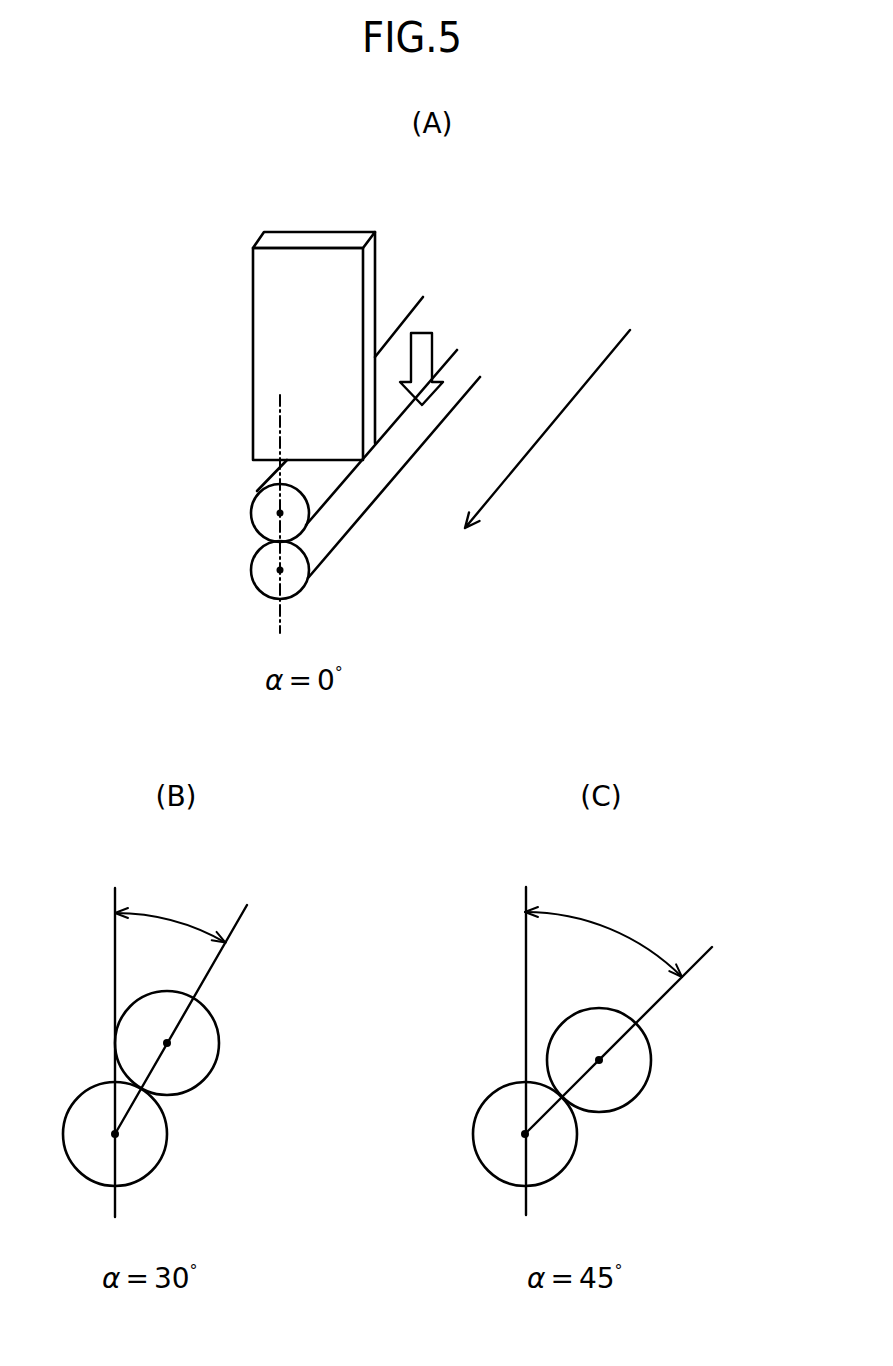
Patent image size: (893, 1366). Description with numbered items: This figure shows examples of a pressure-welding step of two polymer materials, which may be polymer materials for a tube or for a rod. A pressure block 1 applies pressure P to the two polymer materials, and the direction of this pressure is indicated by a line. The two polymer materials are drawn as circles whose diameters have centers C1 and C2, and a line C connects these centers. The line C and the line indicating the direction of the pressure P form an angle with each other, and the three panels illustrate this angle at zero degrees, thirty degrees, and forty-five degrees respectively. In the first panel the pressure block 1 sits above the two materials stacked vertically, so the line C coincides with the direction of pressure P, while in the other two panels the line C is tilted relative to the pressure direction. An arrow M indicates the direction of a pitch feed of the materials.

The pressure block 1 is at (310, 262).
The pressure P is at (422, 345).
The direction of a pitch feed M is at (542, 435).
The center of the diameter of the first polymer material C1 is at (597, 1182).
The center of the diameter of the second polymer material C2 is at (665, 1107).
The line connecting centers C is at (427, 1006).